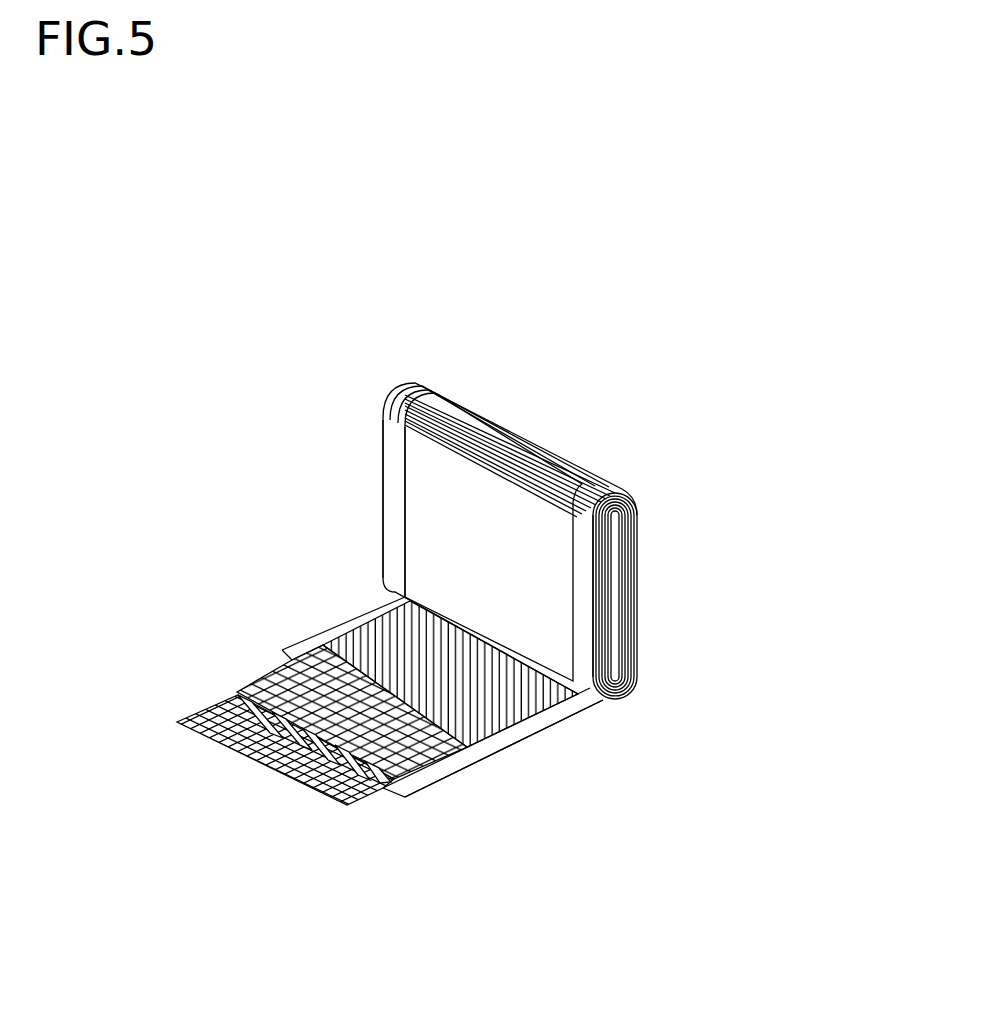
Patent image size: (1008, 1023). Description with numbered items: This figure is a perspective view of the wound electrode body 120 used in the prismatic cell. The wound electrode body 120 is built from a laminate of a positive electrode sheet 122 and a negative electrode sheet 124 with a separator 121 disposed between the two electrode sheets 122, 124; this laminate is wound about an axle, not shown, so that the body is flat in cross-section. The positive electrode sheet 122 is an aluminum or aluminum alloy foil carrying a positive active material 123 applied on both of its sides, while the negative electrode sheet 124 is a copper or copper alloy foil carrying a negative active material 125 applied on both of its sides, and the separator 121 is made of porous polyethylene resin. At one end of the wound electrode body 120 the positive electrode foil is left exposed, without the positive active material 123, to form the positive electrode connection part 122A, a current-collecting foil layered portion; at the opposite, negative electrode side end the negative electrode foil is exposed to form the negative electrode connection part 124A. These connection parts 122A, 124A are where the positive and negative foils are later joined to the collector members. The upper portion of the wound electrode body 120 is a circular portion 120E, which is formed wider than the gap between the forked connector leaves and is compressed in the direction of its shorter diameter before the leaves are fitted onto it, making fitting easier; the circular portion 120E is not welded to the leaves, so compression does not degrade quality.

The wound electrode body 120 is at (532, 432).
The circular portion 120E is at (648, 483).
The separator 121 is at (267, 672).
The positive electrode sheet 122 is at (281, 649).
The positive electrode connection part 122A is at (383, 496).
The positive active material 123 is at (493, 700).
The negative electrode sheet 124 is at (488, 758).
The negative electrode connection part 124A is at (420, 780).
The negative active material 125 is at (238, 697).